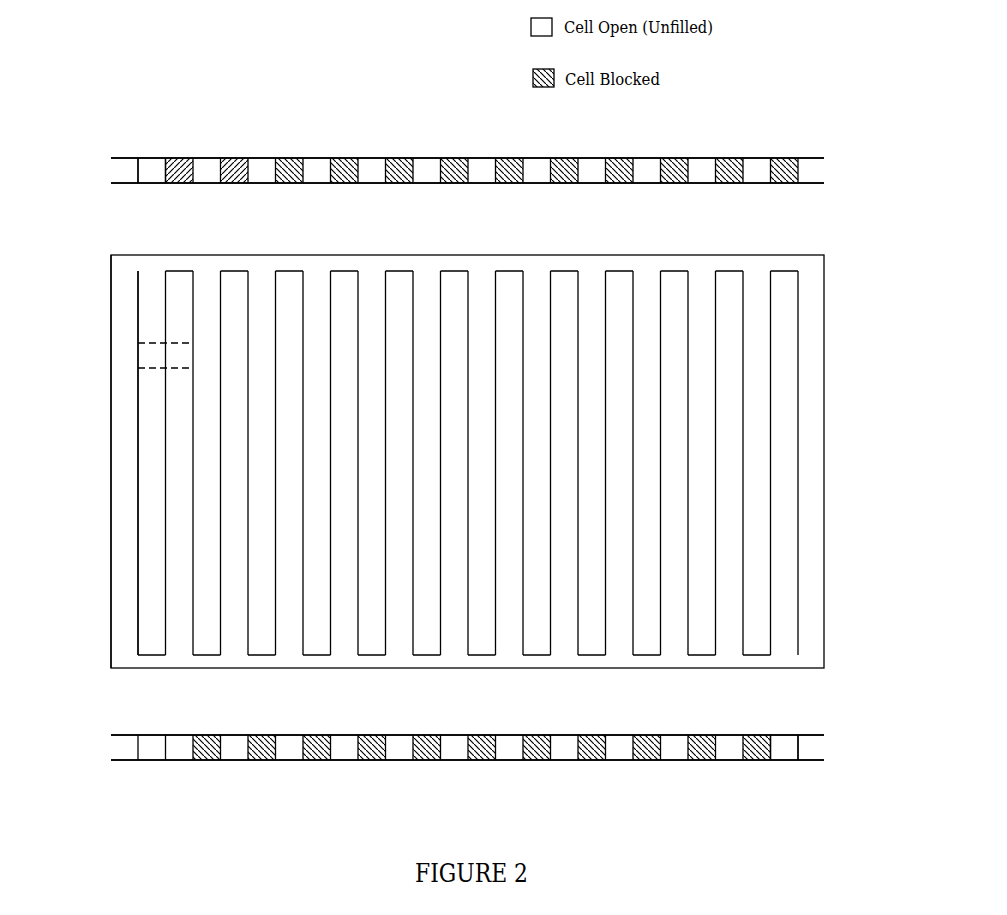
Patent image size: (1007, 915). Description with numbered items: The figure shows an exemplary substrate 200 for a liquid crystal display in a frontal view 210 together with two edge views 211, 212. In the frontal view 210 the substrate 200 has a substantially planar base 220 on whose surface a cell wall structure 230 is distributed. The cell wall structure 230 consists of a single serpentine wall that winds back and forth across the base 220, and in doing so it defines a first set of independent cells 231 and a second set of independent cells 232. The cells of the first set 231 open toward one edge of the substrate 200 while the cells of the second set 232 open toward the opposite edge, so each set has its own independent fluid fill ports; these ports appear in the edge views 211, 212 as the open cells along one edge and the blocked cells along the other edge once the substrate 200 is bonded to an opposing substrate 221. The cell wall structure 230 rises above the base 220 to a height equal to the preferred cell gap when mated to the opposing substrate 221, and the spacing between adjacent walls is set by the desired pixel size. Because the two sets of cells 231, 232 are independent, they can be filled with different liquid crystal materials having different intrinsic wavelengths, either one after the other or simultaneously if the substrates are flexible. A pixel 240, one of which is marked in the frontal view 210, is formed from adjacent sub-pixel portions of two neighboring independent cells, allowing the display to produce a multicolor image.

The substrate 200 is at (824, 383).
The frontal view 210 is at (836, 256).
The edge view 211 is at (836, 160).
The edge view 212 is at (836, 735).
The base 220 is at (121, 157).
The opposing substrate 221 is at (124, 185).
The cell wall structure 230 is at (142, 166).
The first set of independent cells 231 is at (153, 284).
The second set of independent cells 232 is at (181, 640).
The pixel 240 is at (137, 357).